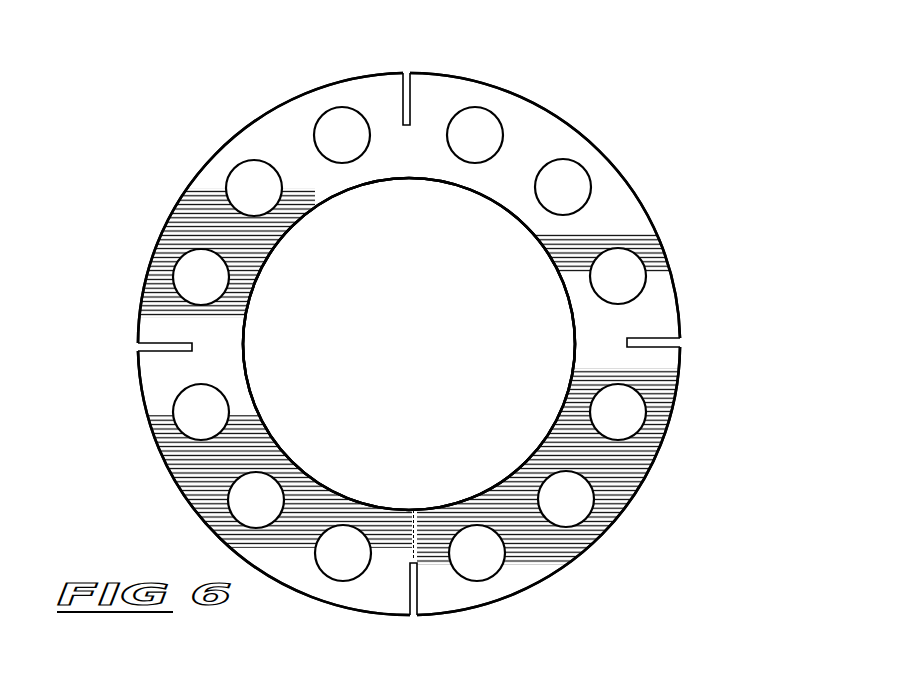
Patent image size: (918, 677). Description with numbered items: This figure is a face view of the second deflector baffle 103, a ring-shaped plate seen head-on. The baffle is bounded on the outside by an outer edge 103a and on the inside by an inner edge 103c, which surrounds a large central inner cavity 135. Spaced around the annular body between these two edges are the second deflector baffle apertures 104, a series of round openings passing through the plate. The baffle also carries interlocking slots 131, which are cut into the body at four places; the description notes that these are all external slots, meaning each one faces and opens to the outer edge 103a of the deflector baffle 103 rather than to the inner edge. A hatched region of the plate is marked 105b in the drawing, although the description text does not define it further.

The second deflector baffle 103 is at (638, 215).
The outer edge 103a is at (596, 127).
The inner edge 103c is at (412, 192).
The second deflector baffle apertures 104 is at (205, 277).
The hatched portion of plate 105b is at (617, 462).
The interlocking slots 131 is at (413, 62).
The inner cavity 135 is at (438, 351).